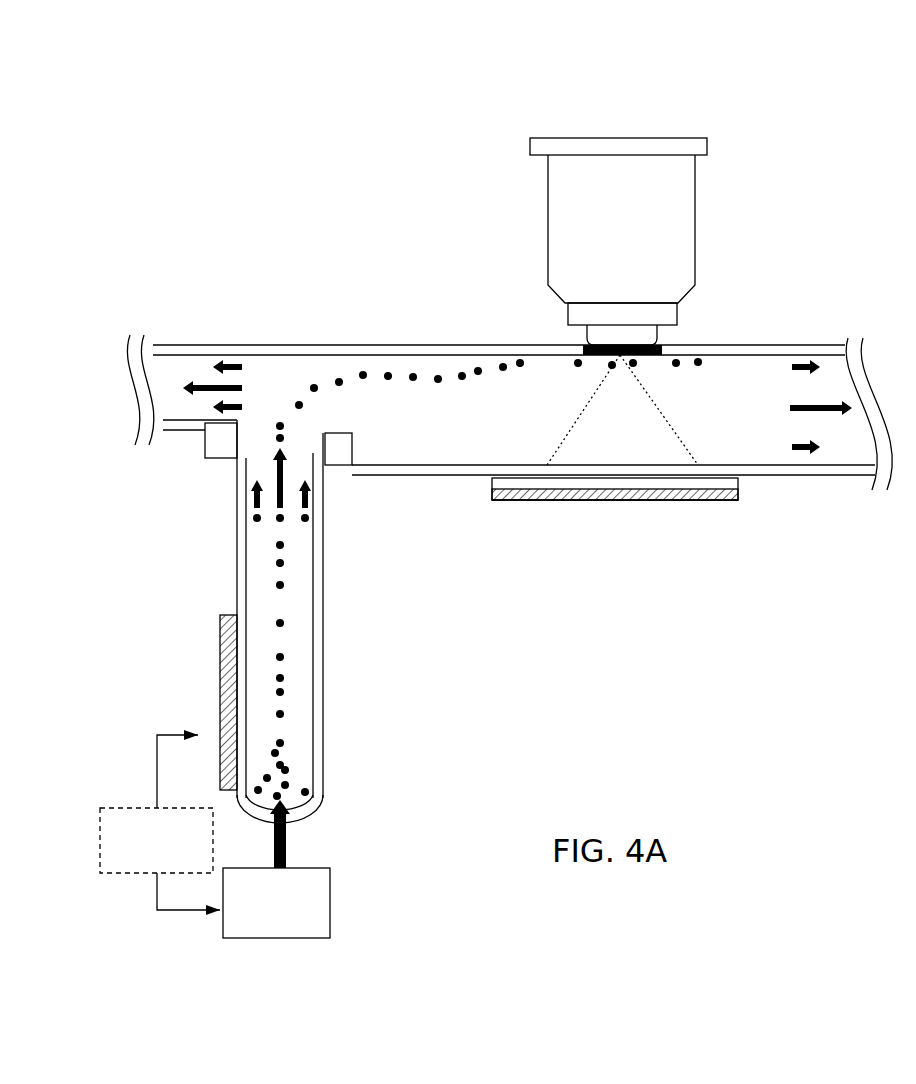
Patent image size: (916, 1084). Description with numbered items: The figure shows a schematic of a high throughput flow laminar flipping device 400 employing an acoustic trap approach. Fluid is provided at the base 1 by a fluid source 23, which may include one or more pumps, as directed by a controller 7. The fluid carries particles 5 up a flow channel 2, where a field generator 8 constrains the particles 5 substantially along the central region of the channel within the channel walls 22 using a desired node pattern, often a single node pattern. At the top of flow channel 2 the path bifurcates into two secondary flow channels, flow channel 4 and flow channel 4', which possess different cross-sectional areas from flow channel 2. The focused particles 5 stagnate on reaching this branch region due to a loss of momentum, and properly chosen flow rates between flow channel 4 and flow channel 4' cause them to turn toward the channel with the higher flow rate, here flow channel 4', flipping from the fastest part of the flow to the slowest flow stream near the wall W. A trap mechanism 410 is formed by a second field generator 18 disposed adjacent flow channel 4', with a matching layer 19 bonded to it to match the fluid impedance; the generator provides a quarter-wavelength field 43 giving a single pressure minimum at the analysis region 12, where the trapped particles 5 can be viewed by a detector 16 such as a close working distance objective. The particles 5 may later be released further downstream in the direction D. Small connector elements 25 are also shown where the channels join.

The device 400 is at (507, 288).
The trap mechanism 410 is at (571, 265).
The detector 16 is at (636, 250).
The analysis region 12 is at (577, 345).
The flow channel 4 is at (486, 347).
The flow channel 4' is at (622, 378).
The downstream direction D is at (770, 410).
The wall W is at (548, 357).
The field 43 is at (653, 402).
The seal / connector 25 is at (220, 442).
The flow channel 2 is at (330, 642).
The channel walls 22 is at (325, 628).
The base 1 is at (313, 818).
The particles 5 is at (283, 683).
The matching layer 19 is at (740, 480).
The second field generator 18 is at (715, 500).
The field generator 8 is at (220, 707).
The controller 7 is at (165, 854).
The fluid source 23 is at (292, 914).